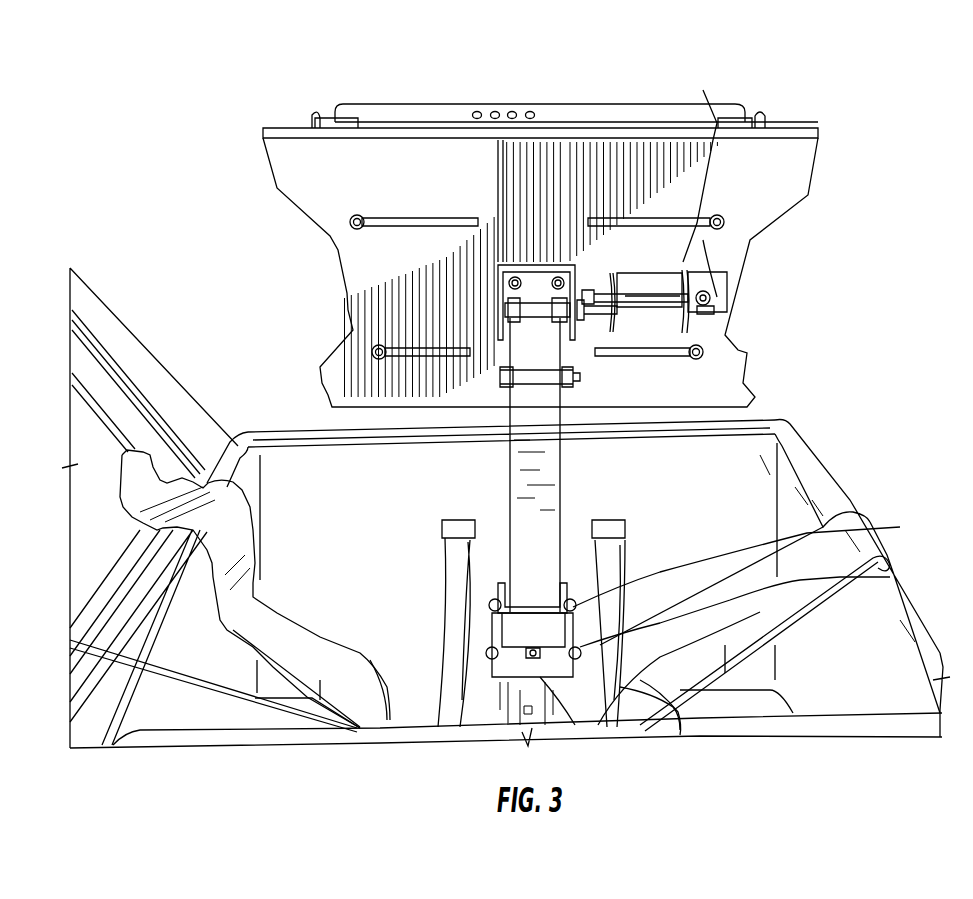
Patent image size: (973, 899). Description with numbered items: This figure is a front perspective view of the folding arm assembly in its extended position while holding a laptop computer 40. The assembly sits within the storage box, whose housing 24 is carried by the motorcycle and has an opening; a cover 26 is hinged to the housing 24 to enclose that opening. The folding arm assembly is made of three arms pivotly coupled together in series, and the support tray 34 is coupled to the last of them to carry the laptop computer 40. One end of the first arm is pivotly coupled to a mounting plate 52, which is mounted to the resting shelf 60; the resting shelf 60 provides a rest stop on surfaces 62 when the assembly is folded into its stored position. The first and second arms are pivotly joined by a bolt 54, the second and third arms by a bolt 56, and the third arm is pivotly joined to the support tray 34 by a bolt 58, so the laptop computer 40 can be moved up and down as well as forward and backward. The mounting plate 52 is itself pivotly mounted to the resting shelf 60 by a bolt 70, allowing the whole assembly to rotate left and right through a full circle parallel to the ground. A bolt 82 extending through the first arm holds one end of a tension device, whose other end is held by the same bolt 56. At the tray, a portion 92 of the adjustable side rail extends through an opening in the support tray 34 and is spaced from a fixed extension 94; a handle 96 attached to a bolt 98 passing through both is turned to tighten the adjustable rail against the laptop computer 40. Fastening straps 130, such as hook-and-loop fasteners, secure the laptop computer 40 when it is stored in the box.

The housing 24 is at (805, 467).
The cover 26 is at (112, 342).
The support tray 34 is at (325, 165).
The laptop computer 40 is at (450, 112).
The mounting plate 52 is at (500, 690).
The bolt 54 is at (900, 530).
The bolt 56 is at (578, 375).
The bolt 58 is at (620, 300).
The resting shelf 60 is at (660, 697).
The surface 62 is at (462, 532).
The bolt 70 is at (535, 658).
The bolt 82 is at (890, 577).
The portion of adjustable side rail 92 is at (703, 90).
The fixed extension 94 is at (600, 303).
The handle 96 is at (717, 300).
The bolt 98 is at (668, 307).
The fastening straps 130 is at (323, 683).